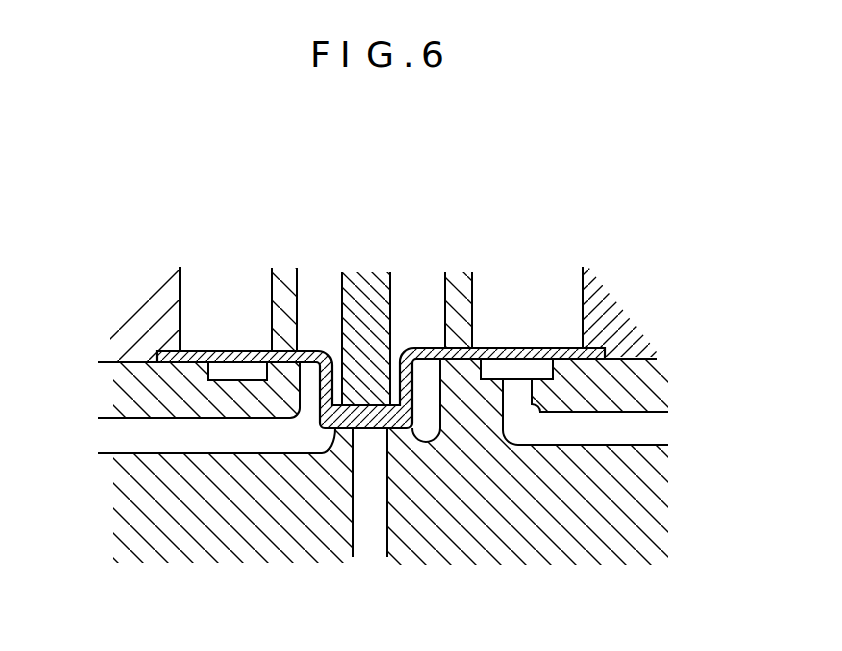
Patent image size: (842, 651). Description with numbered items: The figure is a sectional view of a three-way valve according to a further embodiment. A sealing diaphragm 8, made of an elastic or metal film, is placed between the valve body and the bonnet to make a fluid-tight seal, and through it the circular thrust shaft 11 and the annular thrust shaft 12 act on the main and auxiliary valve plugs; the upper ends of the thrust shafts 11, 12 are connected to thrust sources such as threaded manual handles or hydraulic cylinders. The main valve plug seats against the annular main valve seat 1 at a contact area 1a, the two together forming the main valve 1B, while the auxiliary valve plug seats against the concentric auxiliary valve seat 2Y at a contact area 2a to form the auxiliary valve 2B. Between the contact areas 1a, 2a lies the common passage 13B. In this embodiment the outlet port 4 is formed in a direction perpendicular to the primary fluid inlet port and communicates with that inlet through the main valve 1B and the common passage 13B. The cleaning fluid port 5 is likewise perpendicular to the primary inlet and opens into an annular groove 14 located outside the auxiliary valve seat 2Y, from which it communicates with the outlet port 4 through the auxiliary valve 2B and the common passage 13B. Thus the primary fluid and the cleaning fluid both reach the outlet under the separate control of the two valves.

The main valve seat 1 is at (428, 447).
The contact area of the main valve plug with the main valve seat 1a is at (391, 434).
The main valve 1B is at (336, 378).
The auxiliary valve seat 2Y is at (280, 372).
The contact area of the auxiliary valve plug with the auxiliary valve seat 2a is at (305, 385).
The auxiliary valve 2B is at (483, 337).
The outlet port 4 is at (170, 440).
The cleaning fluid inlet port 5 is at (577, 440).
The sealing diaphragm 8 is at (190, 348).
The circular thrust shaft 11 is at (368, 284).
The annular thrust shaft 12 is at (461, 269).
The common passage 13B is at (428, 380).
The annular groove 14 is at (238, 372).